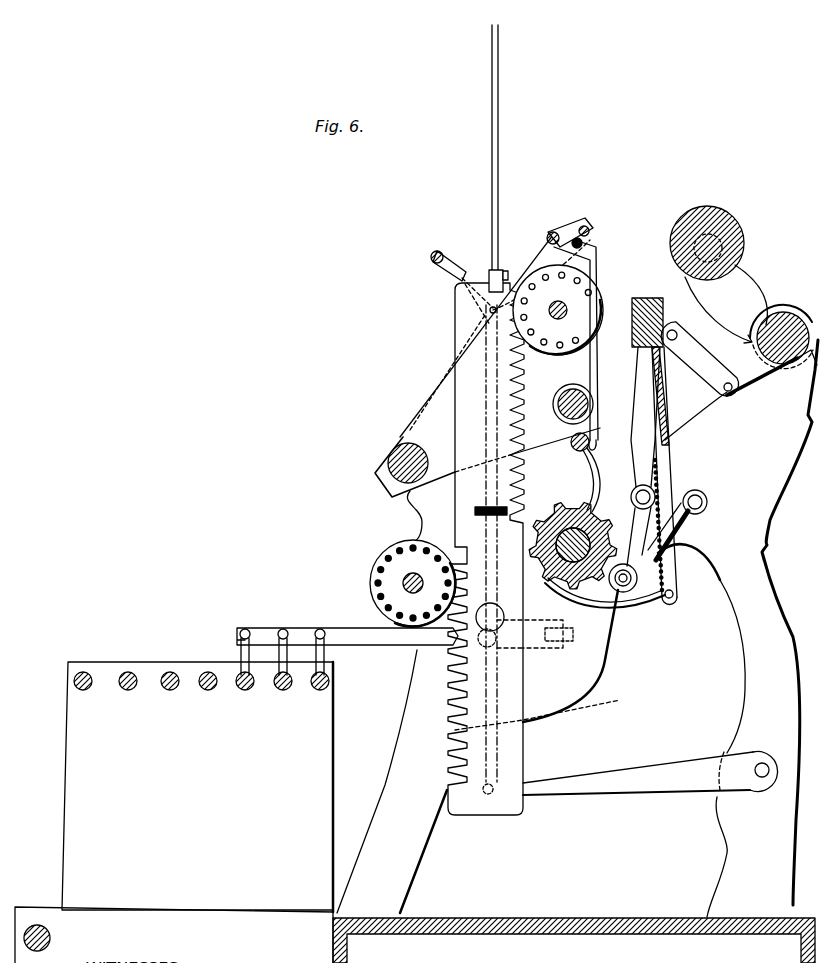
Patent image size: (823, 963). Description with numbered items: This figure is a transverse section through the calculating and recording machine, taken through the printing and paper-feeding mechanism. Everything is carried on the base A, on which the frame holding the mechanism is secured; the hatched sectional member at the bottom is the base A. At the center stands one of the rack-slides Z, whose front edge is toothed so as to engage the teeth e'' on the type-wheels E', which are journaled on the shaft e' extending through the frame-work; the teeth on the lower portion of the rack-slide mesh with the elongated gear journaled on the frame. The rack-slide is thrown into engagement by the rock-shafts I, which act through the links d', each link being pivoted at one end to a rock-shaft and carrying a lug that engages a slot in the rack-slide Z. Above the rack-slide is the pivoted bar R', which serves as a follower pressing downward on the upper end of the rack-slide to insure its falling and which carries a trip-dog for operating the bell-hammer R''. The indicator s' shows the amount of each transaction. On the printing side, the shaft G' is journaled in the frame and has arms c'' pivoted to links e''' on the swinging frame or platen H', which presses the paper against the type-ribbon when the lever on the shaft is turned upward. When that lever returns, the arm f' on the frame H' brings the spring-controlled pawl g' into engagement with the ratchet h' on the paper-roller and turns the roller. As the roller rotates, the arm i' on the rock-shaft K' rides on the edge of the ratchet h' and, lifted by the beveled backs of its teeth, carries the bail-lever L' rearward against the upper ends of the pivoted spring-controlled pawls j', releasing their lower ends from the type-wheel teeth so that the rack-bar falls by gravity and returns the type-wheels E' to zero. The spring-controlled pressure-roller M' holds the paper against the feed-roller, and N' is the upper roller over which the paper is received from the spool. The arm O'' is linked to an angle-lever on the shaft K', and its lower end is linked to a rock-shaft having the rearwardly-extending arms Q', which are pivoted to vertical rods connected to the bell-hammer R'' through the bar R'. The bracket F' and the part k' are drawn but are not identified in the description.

The base A is at (570, 920).
The rock-shaft I is at (130, 692).
The link d' is at (347, 651).
The rack-slide Z is at (534, 549).
The arm O'' is at (535, 677).
The indicator s' is at (502, 158).
The pivoted bar R' is at (462, 278).
The roller bracket F' is at (487, 464).
The teeth e'' is at (407, 520).
The type-wheel E' is at (486, 446).
The shaft e' is at (478, 425).
The bail-lever L' is at (590, 341).
The pivoted spring-controlled pawl j' is at (579, 230).
The bell-hammer R'' is at (624, 227).
The pawl pivot k' is at (572, 453).
The arm i' is at (581, 480).
The ratchet h' is at (573, 560).
The spring-controlled pawl g' is at (614, 600).
The spring-controlled pressure-roller M' is at (605, 572).
The swinging frame or platen H' is at (679, 403).
The rock-shaft K' is at (664, 476).
The link e''' is at (699, 359).
The arm c'' is at (752, 402).
The shaft G' is at (781, 355).
The upper roller N' is at (718, 263).
The arm f' is at (677, 533).
The rearwardly-extending arm Q' is at (650, 765).